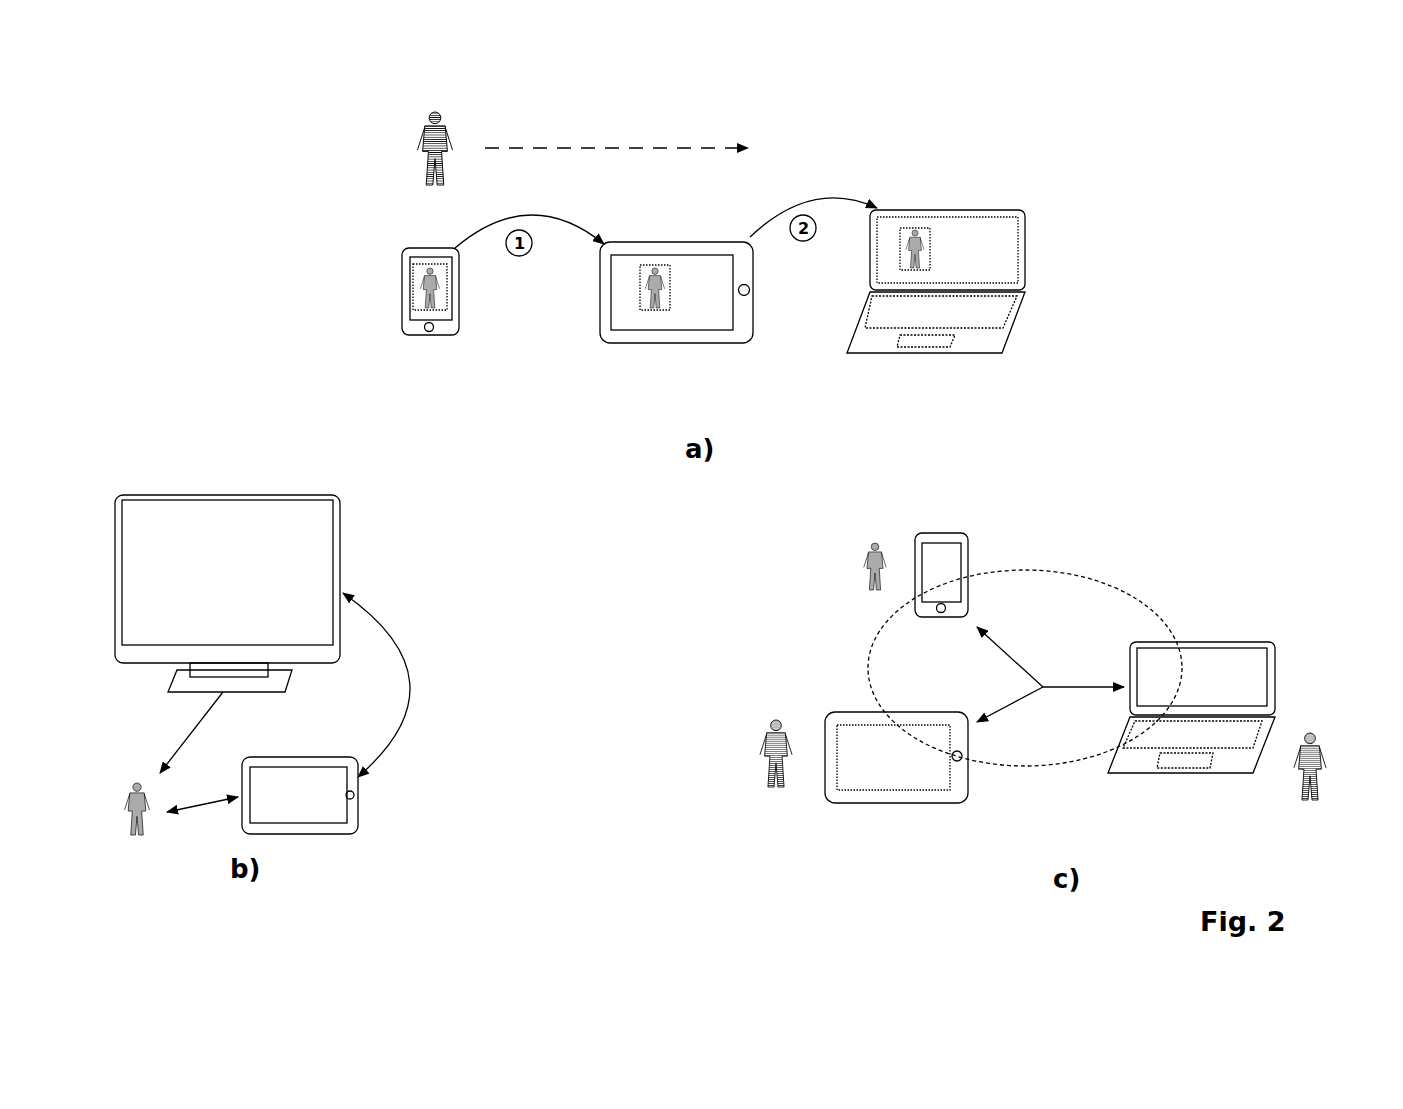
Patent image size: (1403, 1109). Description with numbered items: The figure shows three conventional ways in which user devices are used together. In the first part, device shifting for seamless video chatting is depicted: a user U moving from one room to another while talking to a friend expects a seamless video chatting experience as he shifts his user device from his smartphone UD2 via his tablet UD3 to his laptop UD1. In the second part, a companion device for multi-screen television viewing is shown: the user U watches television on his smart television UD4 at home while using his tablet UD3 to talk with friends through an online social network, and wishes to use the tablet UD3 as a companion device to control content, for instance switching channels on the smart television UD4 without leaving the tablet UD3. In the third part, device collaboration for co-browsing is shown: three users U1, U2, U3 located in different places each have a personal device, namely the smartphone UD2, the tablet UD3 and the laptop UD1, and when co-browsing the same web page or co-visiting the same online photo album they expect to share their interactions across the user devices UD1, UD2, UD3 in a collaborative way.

In FIG. 2a, the user U is at (425, 150).
In FIG. 2b, the user U is at (127, 832).
In FIG. 2c, the first user U1 is at (873, 545).
In FIG. 2c, the second user U2 is at (775, 721).
In FIG. 2c, the third user U3 is at (1320, 750).
In FIG. 2a, the laptop UD1 is at (1025, 245).
In FIG. 2c, the laptop UD1 is at (1213, 645).
In FIG. 2a, the smartphone UD2 is at (403, 290).
In FIG. 2c, the smartphone UD2 is at (968, 555).
In FIG. 2a, the tablet UD3 is at (672, 243).
In FIG. 2b, the tablet UD3 is at (358, 812).
In FIG. 2c, the tablet UD3 is at (833, 803).
In FIG. 2b, the smart television UD4 is at (340, 535).